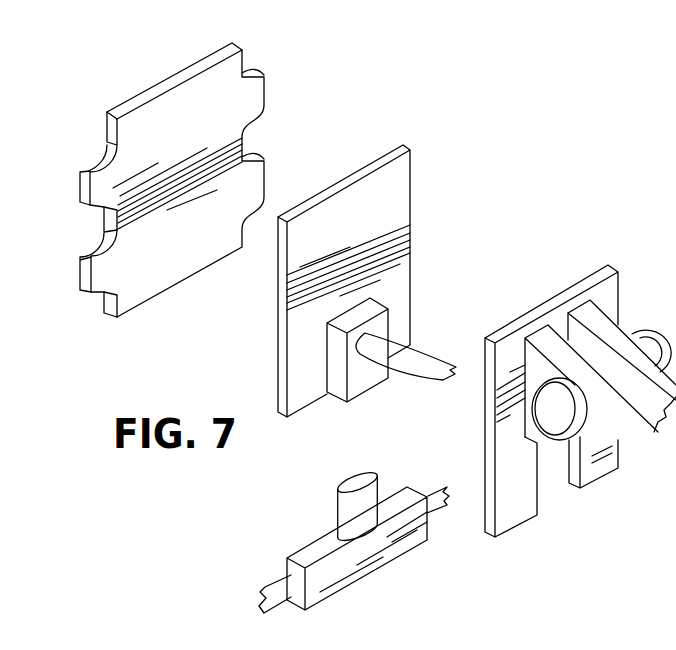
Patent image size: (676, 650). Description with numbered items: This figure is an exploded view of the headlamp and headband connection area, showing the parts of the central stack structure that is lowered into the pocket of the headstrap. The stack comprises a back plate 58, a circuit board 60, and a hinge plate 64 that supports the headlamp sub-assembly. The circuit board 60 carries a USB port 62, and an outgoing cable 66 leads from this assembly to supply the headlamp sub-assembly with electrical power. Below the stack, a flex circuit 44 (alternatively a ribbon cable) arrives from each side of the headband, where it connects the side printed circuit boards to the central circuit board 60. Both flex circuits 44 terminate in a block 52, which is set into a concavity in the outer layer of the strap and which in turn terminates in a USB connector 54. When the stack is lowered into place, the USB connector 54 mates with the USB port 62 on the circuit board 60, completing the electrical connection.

The back plate 58 is at (168, 78).
The circuit board 60 is at (342, 179).
The USB port 62 is at (360, 398).
The outgoing cable 66 is at (440, 360).
The hinge plate 64 is at (619, 290).
The block 52 is at (370, 580).
The USB connector 54 is at (337, 510).
The flex circuit 44 is at (432, 495).